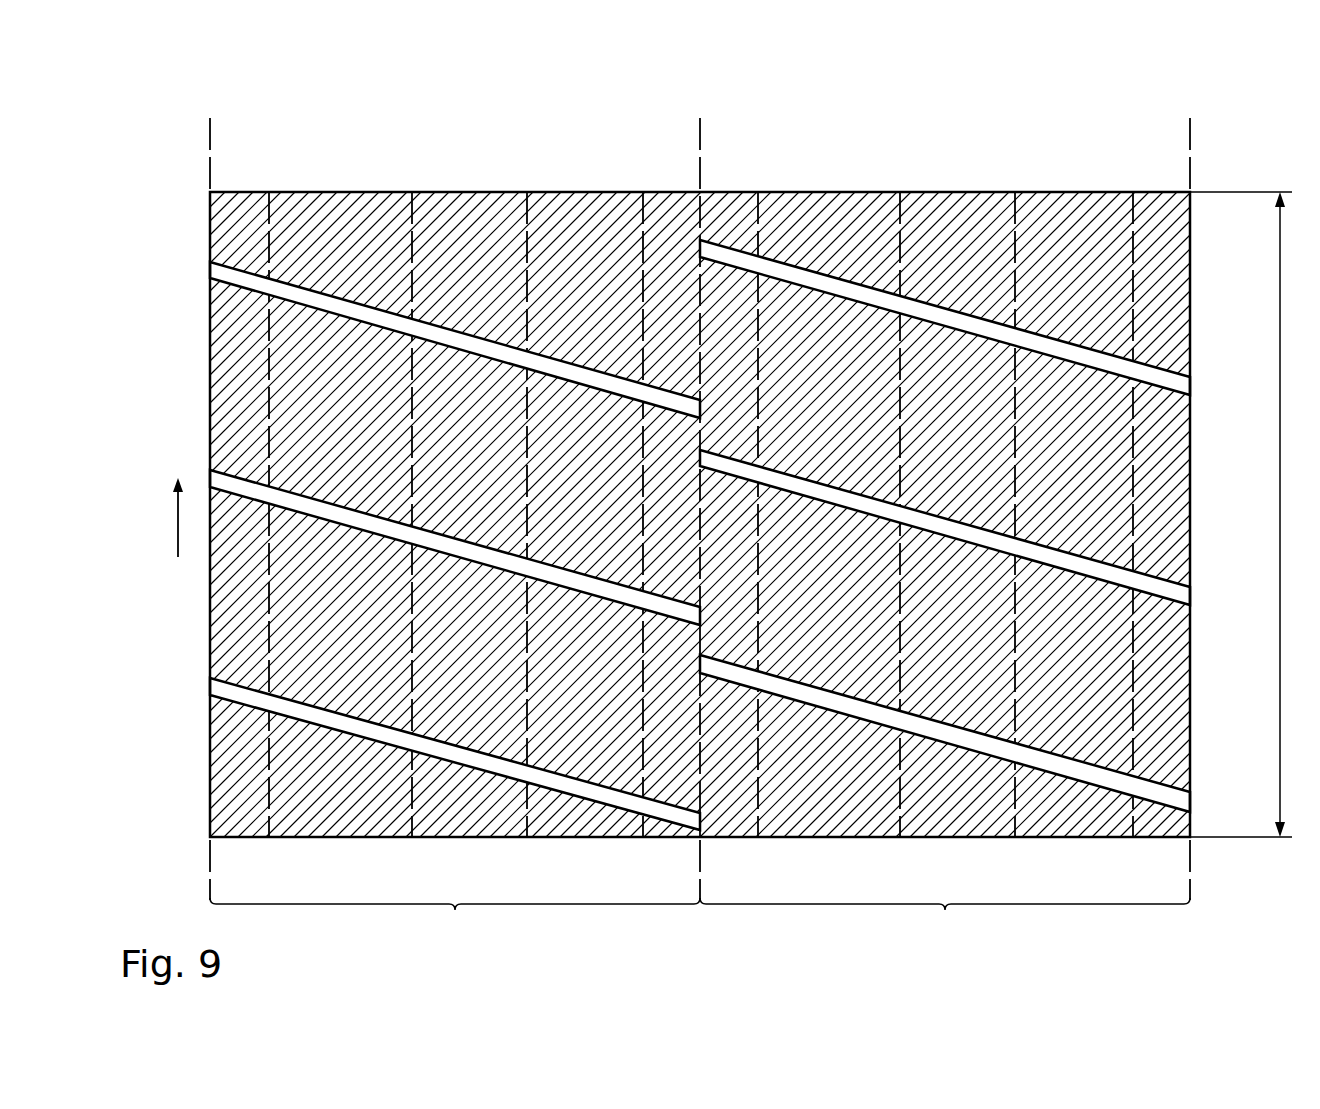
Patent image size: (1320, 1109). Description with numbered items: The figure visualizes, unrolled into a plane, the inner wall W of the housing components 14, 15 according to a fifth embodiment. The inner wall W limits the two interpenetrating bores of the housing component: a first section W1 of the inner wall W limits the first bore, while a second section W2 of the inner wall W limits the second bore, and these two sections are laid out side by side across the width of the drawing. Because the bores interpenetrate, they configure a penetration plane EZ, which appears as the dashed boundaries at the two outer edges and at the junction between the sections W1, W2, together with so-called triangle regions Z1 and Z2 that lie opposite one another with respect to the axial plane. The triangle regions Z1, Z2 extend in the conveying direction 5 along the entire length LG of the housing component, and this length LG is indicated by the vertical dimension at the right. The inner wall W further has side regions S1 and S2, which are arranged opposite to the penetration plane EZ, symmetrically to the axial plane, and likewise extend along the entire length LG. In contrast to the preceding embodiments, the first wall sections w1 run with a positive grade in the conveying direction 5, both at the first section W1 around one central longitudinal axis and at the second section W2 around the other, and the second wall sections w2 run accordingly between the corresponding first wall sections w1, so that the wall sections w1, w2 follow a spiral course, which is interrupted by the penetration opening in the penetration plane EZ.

The housing component 14 is at (166, 179).
The housing component 15 is at (653, 463).
The penetration plane EZ is at (709, 492).
The first wall section w1 is at (282, 287).
The second wall section w2 is at (382, 218).
The side region S1 is at (999, 192).
The side region S2 is at (471, 192).
The inner wall W is at (203, 330).
The conveying direction 5 is at (178, 520).
The triangle region Z1 is at (220, 635).
The triangle region Z2 is at (668, 795).
The first section of the inner wall W1 is at (945, 923).
The second section of the inner wall W2 is at (455, 923).
The length of the housing component LG is at (1241, 514).